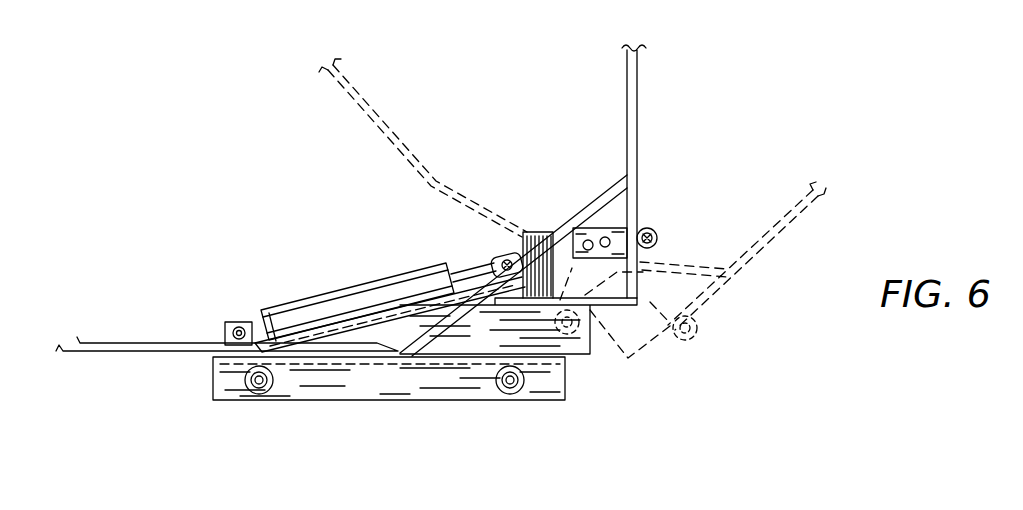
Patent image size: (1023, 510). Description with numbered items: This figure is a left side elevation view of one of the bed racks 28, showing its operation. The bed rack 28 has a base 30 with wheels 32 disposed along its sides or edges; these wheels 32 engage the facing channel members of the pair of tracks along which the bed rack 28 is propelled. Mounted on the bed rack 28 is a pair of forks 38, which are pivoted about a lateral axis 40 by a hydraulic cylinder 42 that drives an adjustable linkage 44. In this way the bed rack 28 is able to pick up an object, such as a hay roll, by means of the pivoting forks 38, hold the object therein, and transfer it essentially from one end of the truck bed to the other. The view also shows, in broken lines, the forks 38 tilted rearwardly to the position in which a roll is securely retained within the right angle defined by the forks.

The bed rack 28 is at (730, 325).
The base 30 is at (388, 391).
The wheels 32 is at (497, 397).
The forks 38 is at (420, 330).
The lateral axis 40 is at (572, 336).
The hydraulic cylinder 42 is at (372, 296).
The adjustable linkage 44 is at (617, 230).